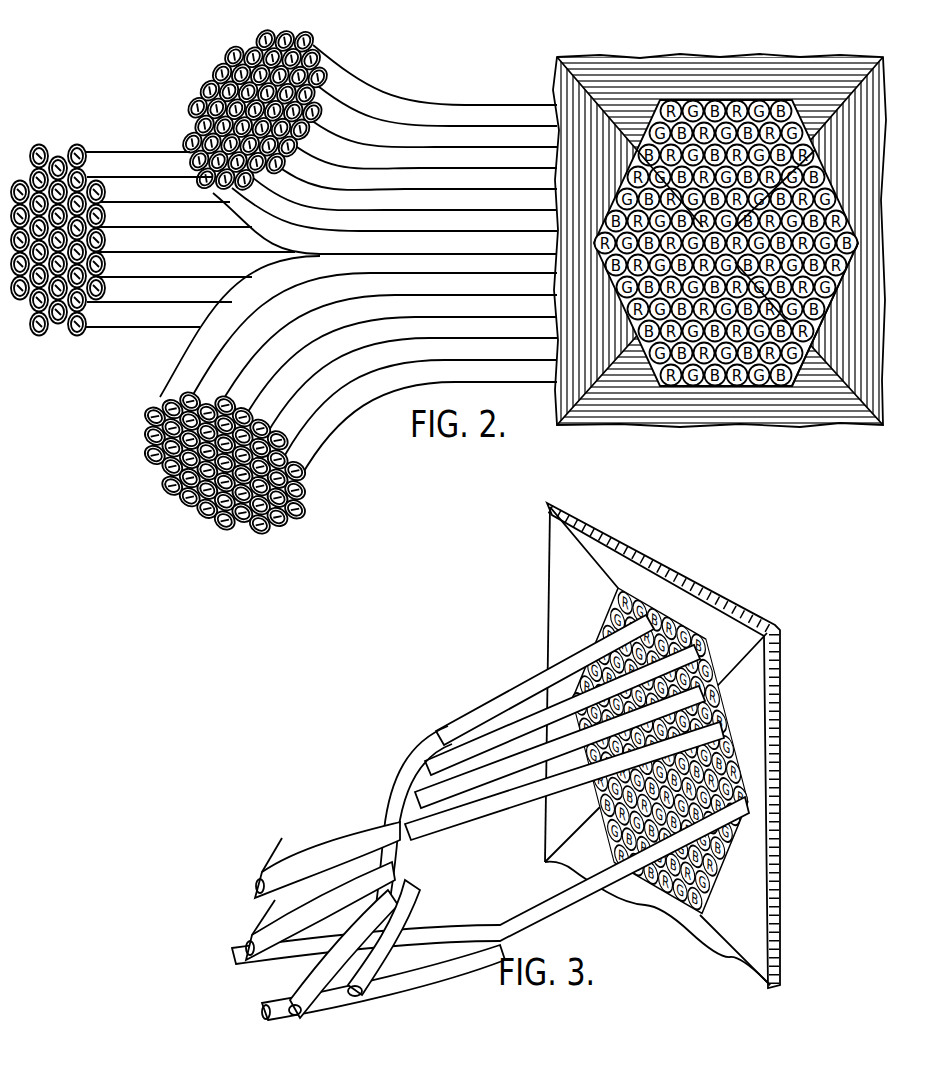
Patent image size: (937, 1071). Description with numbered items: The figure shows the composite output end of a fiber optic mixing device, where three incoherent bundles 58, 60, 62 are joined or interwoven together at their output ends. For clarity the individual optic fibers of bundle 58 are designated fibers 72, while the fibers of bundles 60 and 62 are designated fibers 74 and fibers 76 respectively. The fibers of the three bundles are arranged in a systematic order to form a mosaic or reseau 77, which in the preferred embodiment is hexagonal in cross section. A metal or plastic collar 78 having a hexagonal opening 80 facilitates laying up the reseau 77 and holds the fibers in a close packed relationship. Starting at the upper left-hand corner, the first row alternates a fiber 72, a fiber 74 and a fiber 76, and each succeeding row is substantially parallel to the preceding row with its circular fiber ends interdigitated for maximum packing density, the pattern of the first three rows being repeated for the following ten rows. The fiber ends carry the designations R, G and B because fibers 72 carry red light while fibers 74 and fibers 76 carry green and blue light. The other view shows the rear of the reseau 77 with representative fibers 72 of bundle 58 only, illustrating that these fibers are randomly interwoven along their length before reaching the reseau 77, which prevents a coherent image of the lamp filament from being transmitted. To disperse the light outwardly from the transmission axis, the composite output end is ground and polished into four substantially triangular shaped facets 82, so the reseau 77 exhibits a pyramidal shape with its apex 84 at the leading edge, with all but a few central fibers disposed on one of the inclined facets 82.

In FIG. 2, the incoherent bundle 58 is at (116, 126).
In FIG. 3, the incoherent bundle 58 is at (417, 712).
In FIG. 2, the incoherent bundle 60 is at (340, 438).
In FIG. 2, the incoherent bundle 62 is at (455, 62).
In FIG. 2, the optic fibers 72 is at (73, 153).
In FIG. 3, the optic fibers 72 is at (255, 905).
In FIG. 2, the optic fibers 74 is at (285, 409).
In FIG. 2, the optic fibers 76 is at (207, 113).
In FIG. 2, the reseau 77 is at (747, 88).
In FIG. 2, the collar 78 is at (596, 70).
In FIG. 2, the hexagonal opening 80 is at (700, 220).
In FIG. 2, the triangular shaped facets 82 is at (808, 150).
In FIG. 2, the apex 84 is at (793, 380).